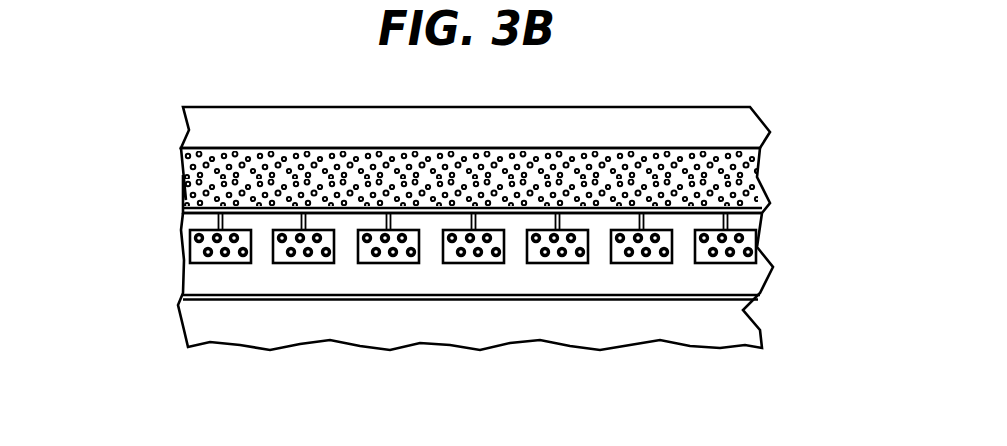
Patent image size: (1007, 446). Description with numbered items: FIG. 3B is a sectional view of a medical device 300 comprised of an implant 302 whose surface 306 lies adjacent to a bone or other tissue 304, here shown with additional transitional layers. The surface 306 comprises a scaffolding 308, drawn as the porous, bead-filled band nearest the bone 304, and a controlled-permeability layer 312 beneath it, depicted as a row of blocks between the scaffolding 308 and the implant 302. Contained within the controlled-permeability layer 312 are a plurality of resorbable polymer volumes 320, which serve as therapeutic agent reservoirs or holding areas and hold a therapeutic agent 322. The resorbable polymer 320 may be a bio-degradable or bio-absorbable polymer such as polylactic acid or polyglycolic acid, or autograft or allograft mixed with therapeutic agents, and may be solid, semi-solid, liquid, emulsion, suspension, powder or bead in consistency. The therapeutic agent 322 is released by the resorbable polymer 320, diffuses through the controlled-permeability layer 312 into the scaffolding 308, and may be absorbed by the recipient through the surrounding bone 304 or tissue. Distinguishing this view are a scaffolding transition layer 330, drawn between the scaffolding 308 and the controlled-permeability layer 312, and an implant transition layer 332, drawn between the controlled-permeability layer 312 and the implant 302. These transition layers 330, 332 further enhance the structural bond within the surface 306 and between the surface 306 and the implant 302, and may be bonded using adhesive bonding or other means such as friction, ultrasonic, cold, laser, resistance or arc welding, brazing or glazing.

The medical device 300 is at (87, 150).
The implant 302 is at (740, 328).
The bone or other tissue 304 is at (190, 130).
The surface 306 is at (163, 150).
The scaffolding 308 is at (642, 168).
The controlled-permeability layer 312 is at (770, 255).
The resorbable polymer volumes 320 is at (542, 257).
The therapeutic agent 322 is at (207, 257).
The scaffolding transition layer 330 is at (773, 212).
The implant transition layer 332 is at (760, 297).